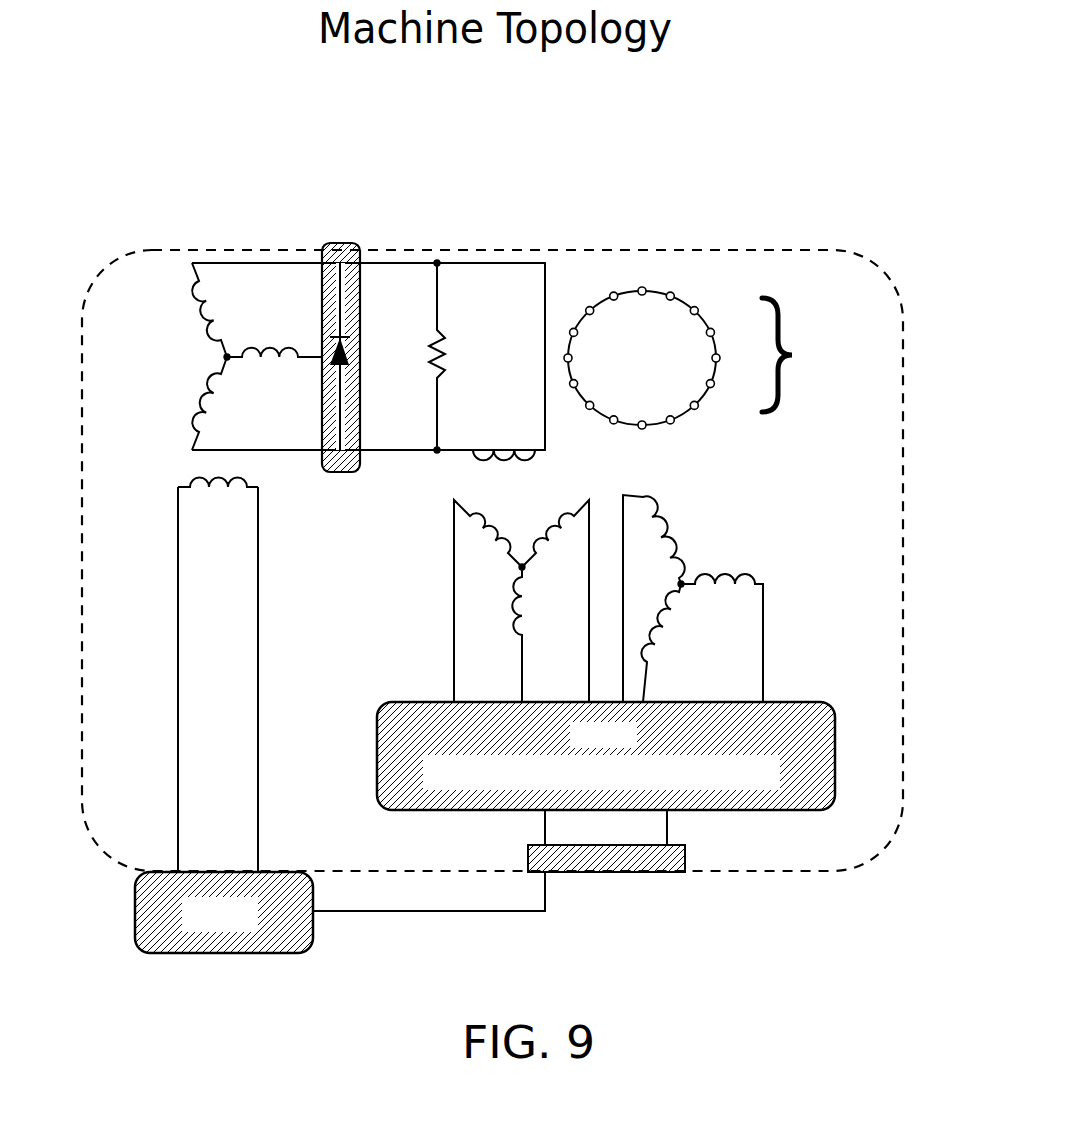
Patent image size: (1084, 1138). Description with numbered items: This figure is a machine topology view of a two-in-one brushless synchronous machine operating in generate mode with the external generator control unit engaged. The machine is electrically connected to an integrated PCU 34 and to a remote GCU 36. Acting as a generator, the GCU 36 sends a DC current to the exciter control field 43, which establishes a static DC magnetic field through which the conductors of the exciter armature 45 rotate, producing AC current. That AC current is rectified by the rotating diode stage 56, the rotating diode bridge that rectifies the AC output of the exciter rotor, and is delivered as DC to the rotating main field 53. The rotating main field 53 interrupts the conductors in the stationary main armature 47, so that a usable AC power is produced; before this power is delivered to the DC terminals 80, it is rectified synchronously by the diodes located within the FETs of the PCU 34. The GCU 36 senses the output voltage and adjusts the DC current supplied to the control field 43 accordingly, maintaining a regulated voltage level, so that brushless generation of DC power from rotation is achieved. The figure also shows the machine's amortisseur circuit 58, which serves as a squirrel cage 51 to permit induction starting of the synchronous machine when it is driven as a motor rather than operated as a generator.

The integrated PCU 34 is at (838, 748).
The remote GCU 36 is at (247, 962).
The exciter control field 43 is at (263, 600).
The exciter armature 45 is at (173, 402).
The main armature 47 is at (770, 613).
The squirrel cage 51 is at (800, 355).
The main field 53 is at (537, 457).
The rotating diode stage 56 is at (338, 477).
The amortisseur circuit 58 is at (692, 407).
The DC terminals 80 is at (637, 865).